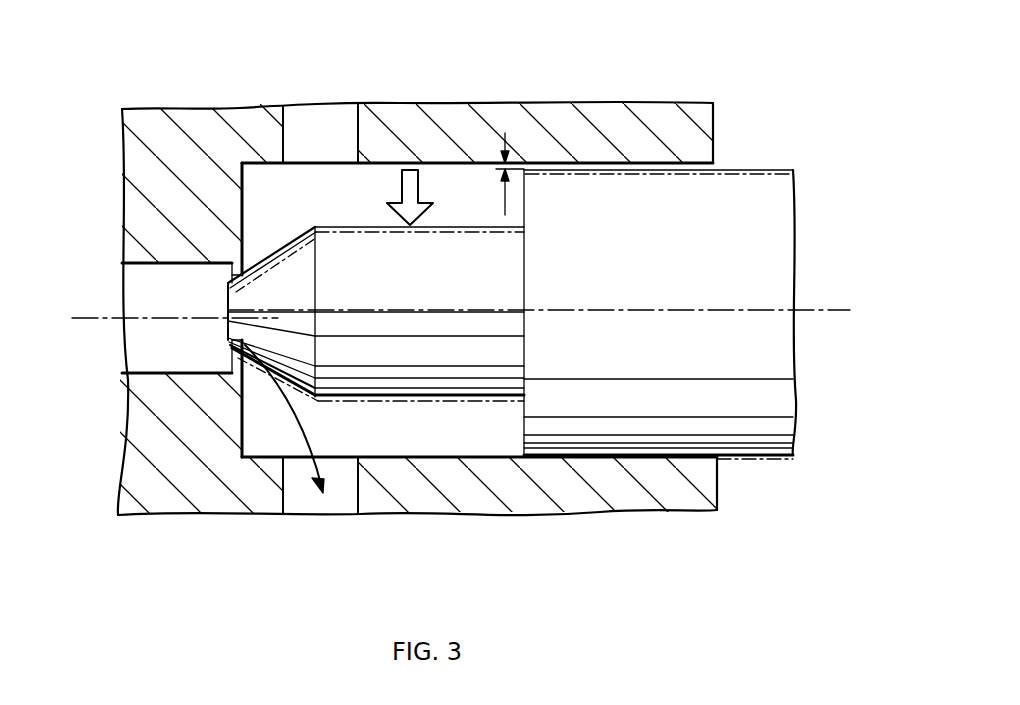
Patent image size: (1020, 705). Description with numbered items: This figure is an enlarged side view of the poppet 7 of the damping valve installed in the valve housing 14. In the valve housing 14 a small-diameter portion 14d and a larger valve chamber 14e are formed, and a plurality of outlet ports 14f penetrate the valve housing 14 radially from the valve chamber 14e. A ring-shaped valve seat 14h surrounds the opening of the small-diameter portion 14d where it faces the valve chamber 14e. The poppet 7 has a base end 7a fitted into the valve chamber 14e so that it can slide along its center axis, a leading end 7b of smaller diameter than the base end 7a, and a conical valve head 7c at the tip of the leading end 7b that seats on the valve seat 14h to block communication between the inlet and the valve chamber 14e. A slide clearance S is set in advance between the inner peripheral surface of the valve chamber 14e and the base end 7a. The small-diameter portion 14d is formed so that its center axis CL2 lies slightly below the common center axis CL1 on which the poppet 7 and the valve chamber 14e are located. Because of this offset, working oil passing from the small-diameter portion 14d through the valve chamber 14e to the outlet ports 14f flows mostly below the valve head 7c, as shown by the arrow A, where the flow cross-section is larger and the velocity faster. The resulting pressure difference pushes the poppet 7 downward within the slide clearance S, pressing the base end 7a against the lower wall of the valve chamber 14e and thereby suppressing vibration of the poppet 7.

The valve housing 14 is at (146, 104).
The small-diameter portion 14d is at (132, 283).
The valve chamber 14e is at (315, 185).
The outlet ports 14f is at (302, 513).
The valve seat 14h is at (233, 345).
The poppet 7 is at (742, 164).
The base end 7a is at (614, 170).
The leading end 7b is at (450, 225).
The valve head 7c is at (275, 250).
The slide clearance S is at (505, 133).
The arrow A is at (283, 397).
The common center axis CL1 is at (564, 309).
The center axis of the small-diameter portion CL2 is at (145, 318).